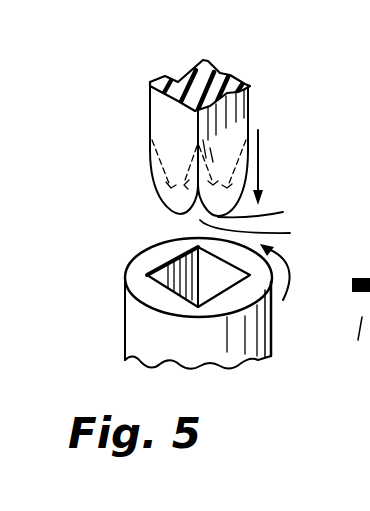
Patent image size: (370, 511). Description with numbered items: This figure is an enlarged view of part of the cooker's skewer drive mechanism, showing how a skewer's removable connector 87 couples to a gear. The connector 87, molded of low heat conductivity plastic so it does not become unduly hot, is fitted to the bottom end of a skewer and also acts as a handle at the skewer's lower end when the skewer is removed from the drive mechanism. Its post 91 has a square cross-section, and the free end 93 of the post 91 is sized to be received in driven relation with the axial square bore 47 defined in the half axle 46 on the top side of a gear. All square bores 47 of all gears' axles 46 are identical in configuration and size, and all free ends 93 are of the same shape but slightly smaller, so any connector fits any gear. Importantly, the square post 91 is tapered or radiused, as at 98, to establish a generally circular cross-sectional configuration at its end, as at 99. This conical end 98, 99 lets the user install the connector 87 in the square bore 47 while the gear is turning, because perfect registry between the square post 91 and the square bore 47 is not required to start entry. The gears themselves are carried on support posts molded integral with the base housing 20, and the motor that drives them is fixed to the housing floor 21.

The free end 93 is at (238, 74).
The removable connector 87 is at (97, 101).
The post 91 is at (110, 123).
The tapered or radiused end 98 is at (265, 215).
The generally circular cross-sectional end 99 is at (258, 235).
The half axle 46 is at (143, 326).
The axial square bore 47 is at (177, 273).
The base housing 20 is at (335, 308).
The housing floor 21 is at (357, 341).